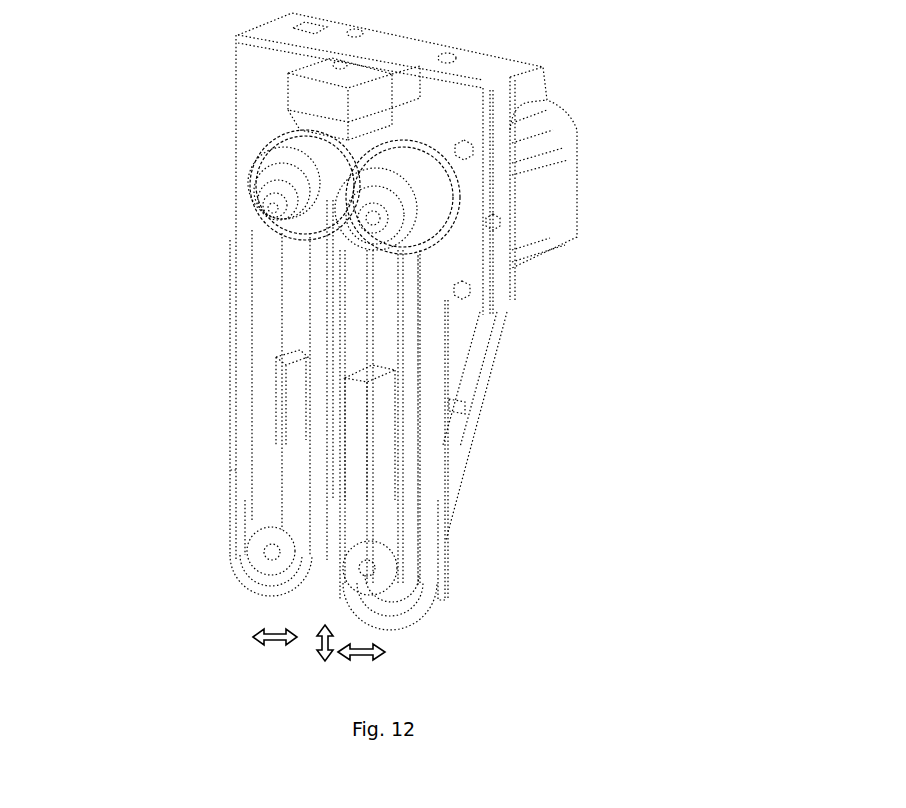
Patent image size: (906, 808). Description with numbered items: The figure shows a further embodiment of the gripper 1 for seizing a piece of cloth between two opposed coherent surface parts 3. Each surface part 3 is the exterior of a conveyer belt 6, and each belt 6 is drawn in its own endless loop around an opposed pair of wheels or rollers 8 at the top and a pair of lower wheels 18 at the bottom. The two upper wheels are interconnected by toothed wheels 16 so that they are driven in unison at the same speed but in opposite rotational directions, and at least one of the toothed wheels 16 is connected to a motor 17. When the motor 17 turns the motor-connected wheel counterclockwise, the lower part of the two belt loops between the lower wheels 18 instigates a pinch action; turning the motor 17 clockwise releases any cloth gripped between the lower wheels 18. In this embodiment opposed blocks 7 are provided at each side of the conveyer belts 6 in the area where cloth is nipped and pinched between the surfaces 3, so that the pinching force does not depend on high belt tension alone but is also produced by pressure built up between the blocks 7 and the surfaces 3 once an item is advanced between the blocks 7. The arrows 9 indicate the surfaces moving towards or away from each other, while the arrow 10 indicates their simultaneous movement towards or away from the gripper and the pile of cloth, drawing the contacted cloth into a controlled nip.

The drive assembly 1 is at (683, 358).
The surface part 3 is at (335, 598).
The conveyer belt 6 is at (240, 412).
The opposed block 7 is at (298, 432).
The wheel or roller 8 is at (255, 191).
The arrow 9 is at (250, 637).
The arrow 10 is at (316, 651).
The toothed wheel 16 is at (297, 135).
The motor 17 is at (567, 163).
The lower wheel 18 is at (263, 539).